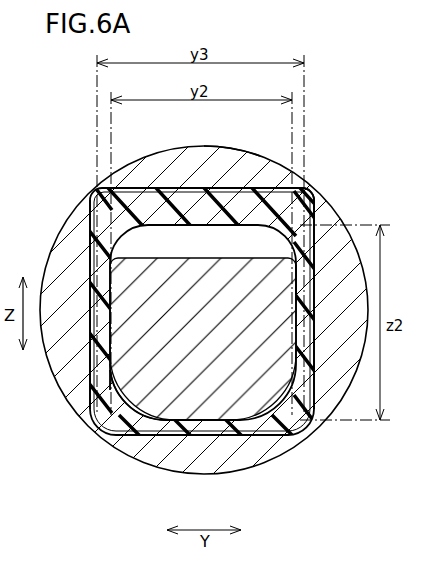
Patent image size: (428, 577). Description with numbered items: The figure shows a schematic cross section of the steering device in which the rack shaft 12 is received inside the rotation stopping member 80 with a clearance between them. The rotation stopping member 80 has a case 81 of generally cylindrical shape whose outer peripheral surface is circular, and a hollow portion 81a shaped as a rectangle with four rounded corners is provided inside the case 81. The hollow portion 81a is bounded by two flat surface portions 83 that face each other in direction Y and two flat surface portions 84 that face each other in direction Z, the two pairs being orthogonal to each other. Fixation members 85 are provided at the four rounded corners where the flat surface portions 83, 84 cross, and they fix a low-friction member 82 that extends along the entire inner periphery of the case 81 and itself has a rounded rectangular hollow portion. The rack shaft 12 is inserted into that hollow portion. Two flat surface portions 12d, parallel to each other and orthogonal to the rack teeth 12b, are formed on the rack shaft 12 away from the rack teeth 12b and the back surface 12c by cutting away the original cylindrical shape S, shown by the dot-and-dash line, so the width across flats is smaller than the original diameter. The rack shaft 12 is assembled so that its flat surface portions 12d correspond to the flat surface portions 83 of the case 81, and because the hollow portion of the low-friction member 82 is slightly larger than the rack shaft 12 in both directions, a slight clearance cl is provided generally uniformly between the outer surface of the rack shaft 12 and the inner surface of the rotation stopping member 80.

The rotation stopping member 80 is at (322, 125).
The case 81 is at (241, 160).
The hollow portion 81a is at (100, 257).
The low-friction member 82 is at (258, 190).
The flat surface portions 83 is at (306, 278).
The flat surface portions 84 is at (152, 190).
The fixation members 85 is at (322, 206).
The rack shaft 12 is at (148, 437).
The rack teeth 12b is at (200, 192).
The back surface 12c is at (220, 437).
The flat surface portions 12d is at (92, 332).
The original cylindrical shape S is at (305, 373).
The clearance cl is at (119, 438).